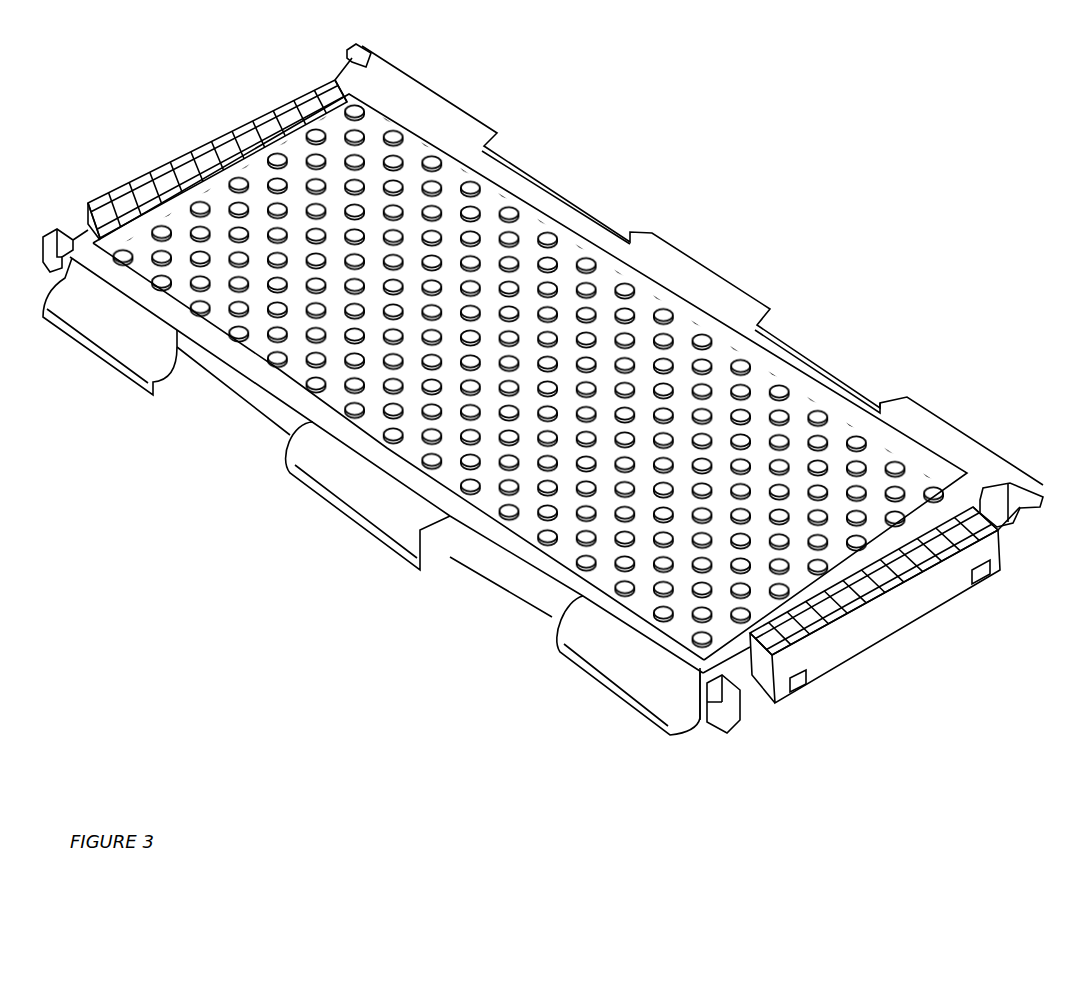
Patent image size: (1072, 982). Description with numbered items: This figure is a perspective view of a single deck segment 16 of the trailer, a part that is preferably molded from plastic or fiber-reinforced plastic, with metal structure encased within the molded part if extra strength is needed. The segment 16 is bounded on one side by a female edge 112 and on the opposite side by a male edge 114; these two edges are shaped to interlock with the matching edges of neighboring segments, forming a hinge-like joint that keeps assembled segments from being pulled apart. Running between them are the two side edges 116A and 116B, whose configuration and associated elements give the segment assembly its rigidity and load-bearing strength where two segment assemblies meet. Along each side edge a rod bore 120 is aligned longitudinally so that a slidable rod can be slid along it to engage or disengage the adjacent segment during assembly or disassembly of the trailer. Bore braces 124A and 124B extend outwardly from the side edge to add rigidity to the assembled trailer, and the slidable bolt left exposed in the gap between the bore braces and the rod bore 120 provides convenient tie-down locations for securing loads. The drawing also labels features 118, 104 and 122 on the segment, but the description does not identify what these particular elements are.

The deck segment 16 is at (897, 210).
The male edge 114 is at (770, 253).
The bumps 118 is at (223, 197).
The side edge 116A is at (72, 200).
The side edge 116B is at (917, 672).
The connector housing 104 is at (828, 687).
The latch 122 is at (797, 680).
The rod bore 120 is at (733, 693).
The bore brace 124A is at (48, 268).
The bore brace 124B is at (1030, 473).
The female edge 112 is at (305, 536).